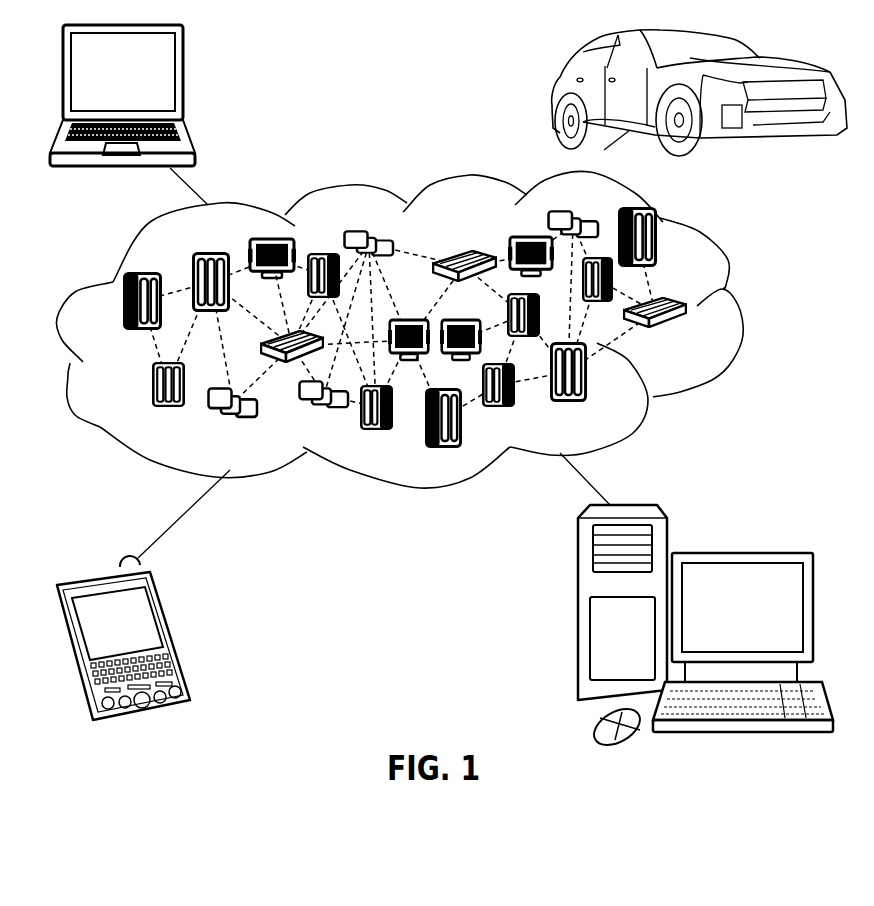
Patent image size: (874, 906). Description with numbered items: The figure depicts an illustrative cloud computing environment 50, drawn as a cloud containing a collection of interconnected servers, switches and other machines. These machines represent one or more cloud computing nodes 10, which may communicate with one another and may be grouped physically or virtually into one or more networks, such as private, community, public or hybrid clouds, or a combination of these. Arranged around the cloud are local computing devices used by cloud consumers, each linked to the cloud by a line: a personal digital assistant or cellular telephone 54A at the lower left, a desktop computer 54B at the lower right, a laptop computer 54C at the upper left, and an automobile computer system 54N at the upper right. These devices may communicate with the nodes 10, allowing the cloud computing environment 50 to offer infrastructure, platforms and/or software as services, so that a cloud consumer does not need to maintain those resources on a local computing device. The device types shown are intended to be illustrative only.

The cloud computing nodes 10 is at (423, 329).
The cloud computing environment 50 is at (740, 310).
The personal digital assistant (PDA) or cellular telephone 54A is at (175, 633).
The desktop computer 54B is at (738, 552).
The laptop computer 54C is at (183, 80).
The automobile computer system 54N is at (553, 93).